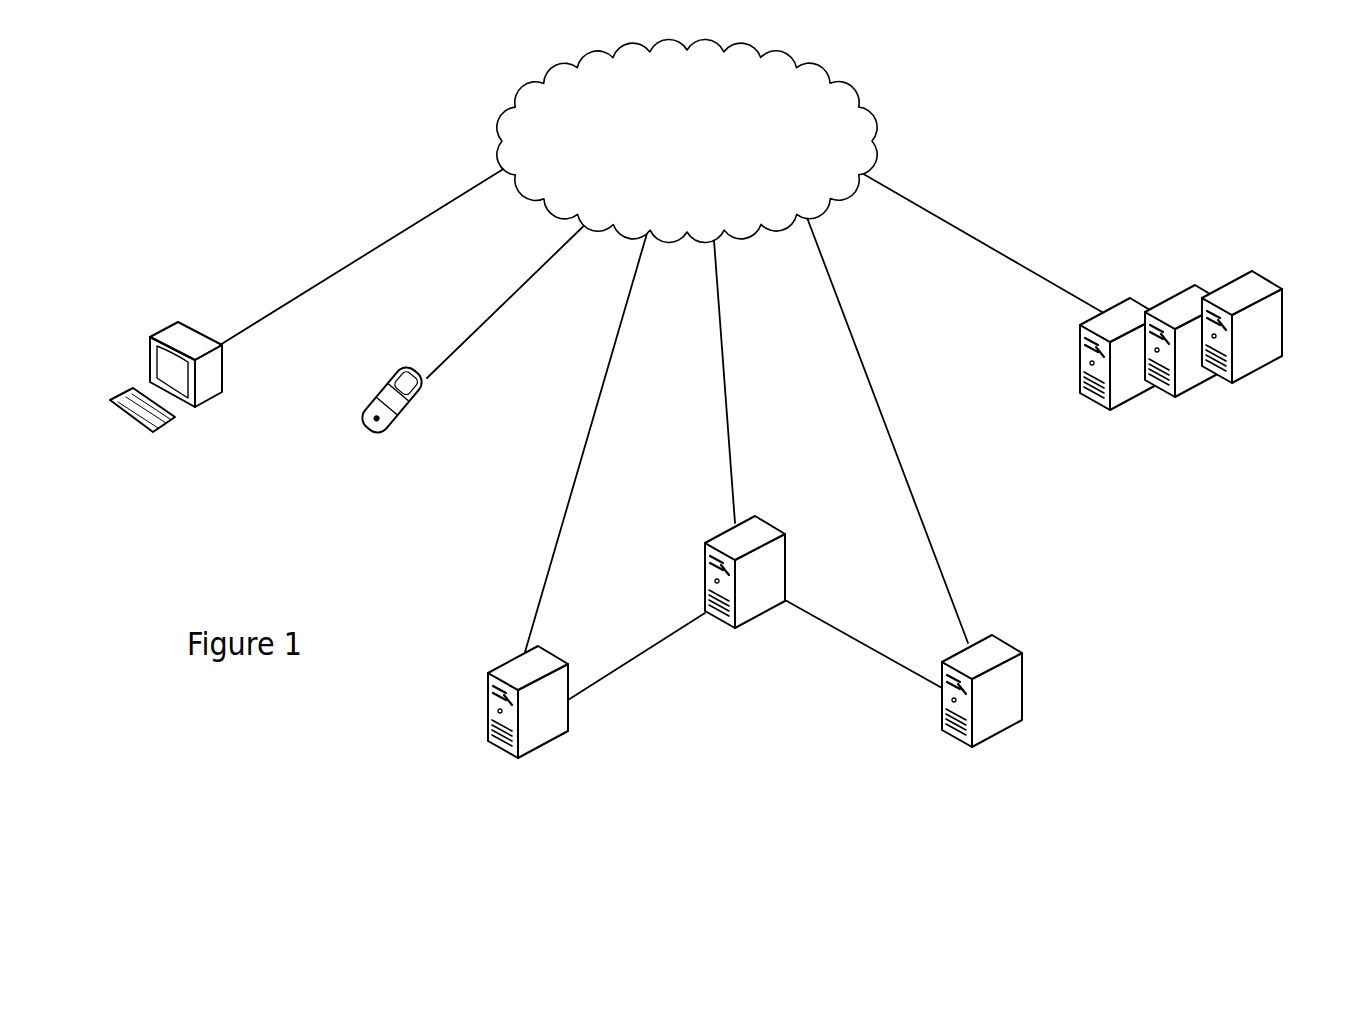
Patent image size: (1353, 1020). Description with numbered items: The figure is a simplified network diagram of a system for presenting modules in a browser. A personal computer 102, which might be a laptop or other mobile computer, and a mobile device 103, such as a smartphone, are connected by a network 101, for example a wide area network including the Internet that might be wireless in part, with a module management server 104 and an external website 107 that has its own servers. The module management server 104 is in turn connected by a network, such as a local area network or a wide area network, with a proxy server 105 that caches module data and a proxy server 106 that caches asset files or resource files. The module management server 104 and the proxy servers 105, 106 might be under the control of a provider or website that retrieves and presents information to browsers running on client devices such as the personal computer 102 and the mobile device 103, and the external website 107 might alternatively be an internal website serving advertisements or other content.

The network 101 is at (837, 95).
The personal computer 102 is at (195, 408).
The mobile device 103 is at (402, 433).
The module management server 104 is at (762, 615).
The proxy server 105 is at (550, 743).
The proxy server 106 is at (1022, 688).
The external website 107 is at (1178, 392).